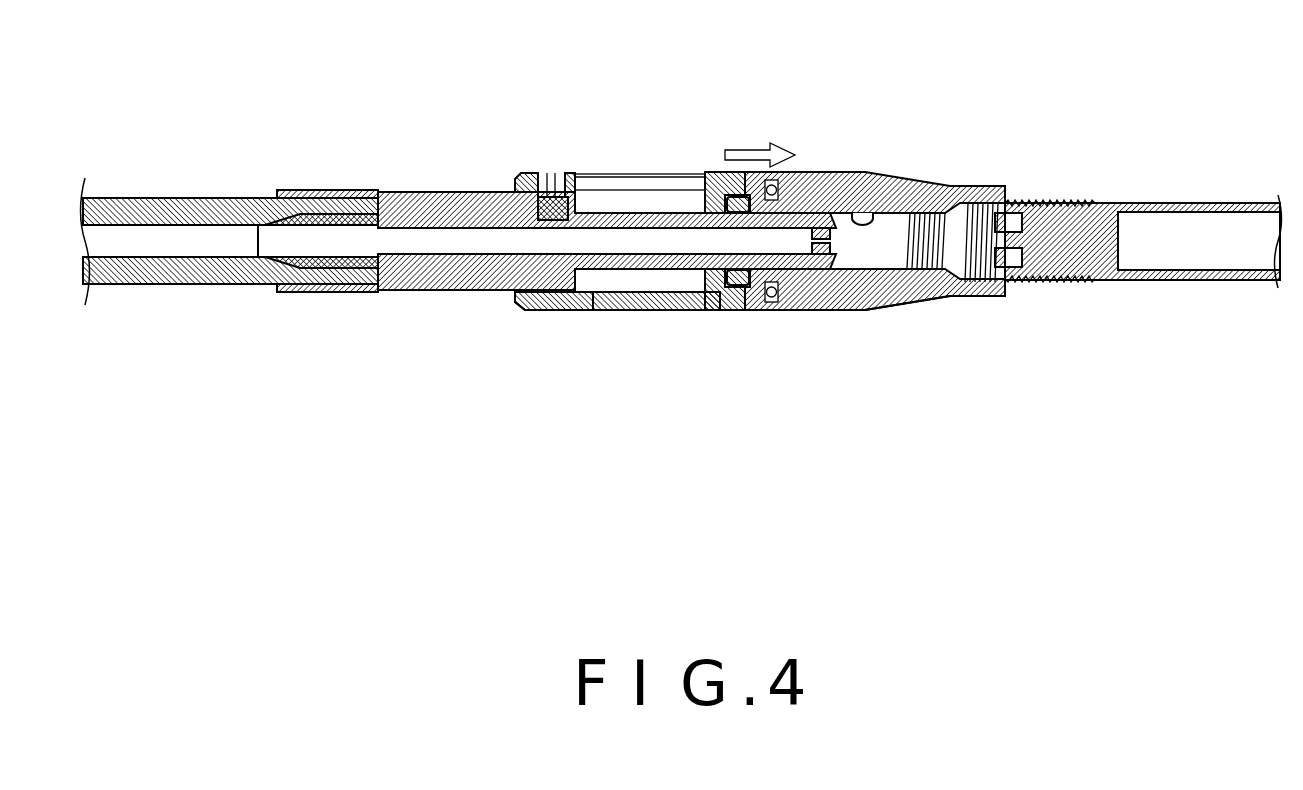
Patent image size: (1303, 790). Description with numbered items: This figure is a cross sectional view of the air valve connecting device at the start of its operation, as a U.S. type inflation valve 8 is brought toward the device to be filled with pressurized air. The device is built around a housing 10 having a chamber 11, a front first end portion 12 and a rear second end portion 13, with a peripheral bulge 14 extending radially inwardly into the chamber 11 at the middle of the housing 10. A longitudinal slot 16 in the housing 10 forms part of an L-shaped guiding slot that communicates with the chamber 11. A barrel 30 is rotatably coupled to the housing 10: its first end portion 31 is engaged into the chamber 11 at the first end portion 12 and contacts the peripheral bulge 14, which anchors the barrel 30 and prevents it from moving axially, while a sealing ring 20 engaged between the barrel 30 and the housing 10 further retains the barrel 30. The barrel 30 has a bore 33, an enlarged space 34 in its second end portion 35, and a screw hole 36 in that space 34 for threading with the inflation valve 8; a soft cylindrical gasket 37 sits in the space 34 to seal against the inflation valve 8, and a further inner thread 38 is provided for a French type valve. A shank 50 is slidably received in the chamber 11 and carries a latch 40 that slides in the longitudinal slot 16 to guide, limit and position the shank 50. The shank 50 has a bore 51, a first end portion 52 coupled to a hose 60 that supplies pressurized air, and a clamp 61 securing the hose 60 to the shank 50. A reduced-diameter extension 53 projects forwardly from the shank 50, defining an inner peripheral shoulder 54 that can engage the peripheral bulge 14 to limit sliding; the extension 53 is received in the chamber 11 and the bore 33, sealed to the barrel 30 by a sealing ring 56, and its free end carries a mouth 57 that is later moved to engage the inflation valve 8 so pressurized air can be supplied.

The U.S. type inflation valve 8 is at (1228, 281).
The housing 10 is at (545, 310).
The chamber 11 is at (652, 270).
The first end portion 12 is at (790, 300).
The second end portion 13 is at (520, 308).
The peripheral bulge 14 is at (723, 300).
The longitudinal slot 16 is at (603, 176).
The sealing ring 20 is at (818, 172).
The barrel 30 is at (887, 305).
The first end portion 31 is at (757, 308).
The bore 33 is at (864, 216).
The space 34 is at (993, 202).
The second end portion 35 is at (1005, 284).
The screw hole 36 is at (982, 284).
The cylindrical gasket 37 is at (968, 203).
The inner thread 38 is at (922, 268).
The latch 40 is at (547, 173).
The shank 50 is at (430, 192).
The bore 51 is at (462, 244).
The first end portion 52 is at (297, 190).
The extension 53 is at (655, 213).
The inner peripheral shoulder 54 is at (595, 310).
The sealing ring 56 is at (737, 193).
The mouth 57 is at (848, 300).
The hose 60 is at (168, 198).
The clamp 61 is at (312, 292).